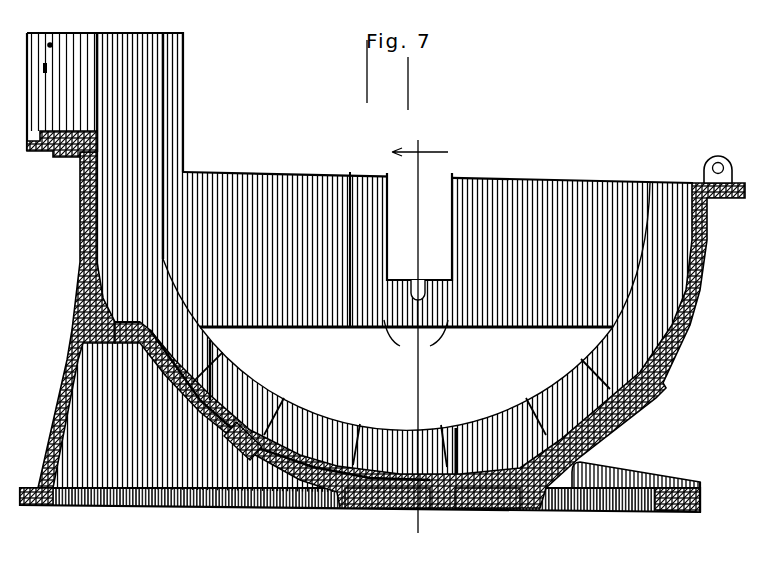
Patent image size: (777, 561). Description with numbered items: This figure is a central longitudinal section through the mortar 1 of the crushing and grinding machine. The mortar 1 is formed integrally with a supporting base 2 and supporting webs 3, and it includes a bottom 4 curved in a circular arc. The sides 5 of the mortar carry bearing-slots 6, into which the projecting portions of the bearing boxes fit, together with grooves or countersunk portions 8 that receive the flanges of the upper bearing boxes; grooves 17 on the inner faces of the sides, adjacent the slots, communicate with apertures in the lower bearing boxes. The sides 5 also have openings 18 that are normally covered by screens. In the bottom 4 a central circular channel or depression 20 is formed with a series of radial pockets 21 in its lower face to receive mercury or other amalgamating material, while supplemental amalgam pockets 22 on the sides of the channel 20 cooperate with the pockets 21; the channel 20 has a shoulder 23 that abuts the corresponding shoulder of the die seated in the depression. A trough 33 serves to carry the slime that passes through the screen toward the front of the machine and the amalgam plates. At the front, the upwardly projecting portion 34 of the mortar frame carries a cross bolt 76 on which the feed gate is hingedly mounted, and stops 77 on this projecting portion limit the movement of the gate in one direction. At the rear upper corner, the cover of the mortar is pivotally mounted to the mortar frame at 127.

The mortar 1 is at (395, 253).
The supporting base 2 is at (154, 503).
The supporting webs 3 is at (80, 392).
The bottom 4 is at (285, 458).
The sides 5 is at (545, 186).
The bearing-slots 6 is at (431, 197).
The grooves or countersunk portions 8 is at (416, 337).
The grooves 17 is at (420, 287).
The openings 18 is at (406, 378).
The central circular channel or depression 20 is at (432, 478).
The radial pockets 21 is at (252, 433).
The supplemental amalgam pockets 22 is at (243, 395).
The shoulder 23 is at (126, 322).
The trough 33 is at (634, 478).
The upwardly projecting portion of the mortar frame 34 is at (105, 134).
The cross bolt 76 is at (51, 42).
The stops 77 is at (48, 68).
The pivot 127 is at (724, 162).